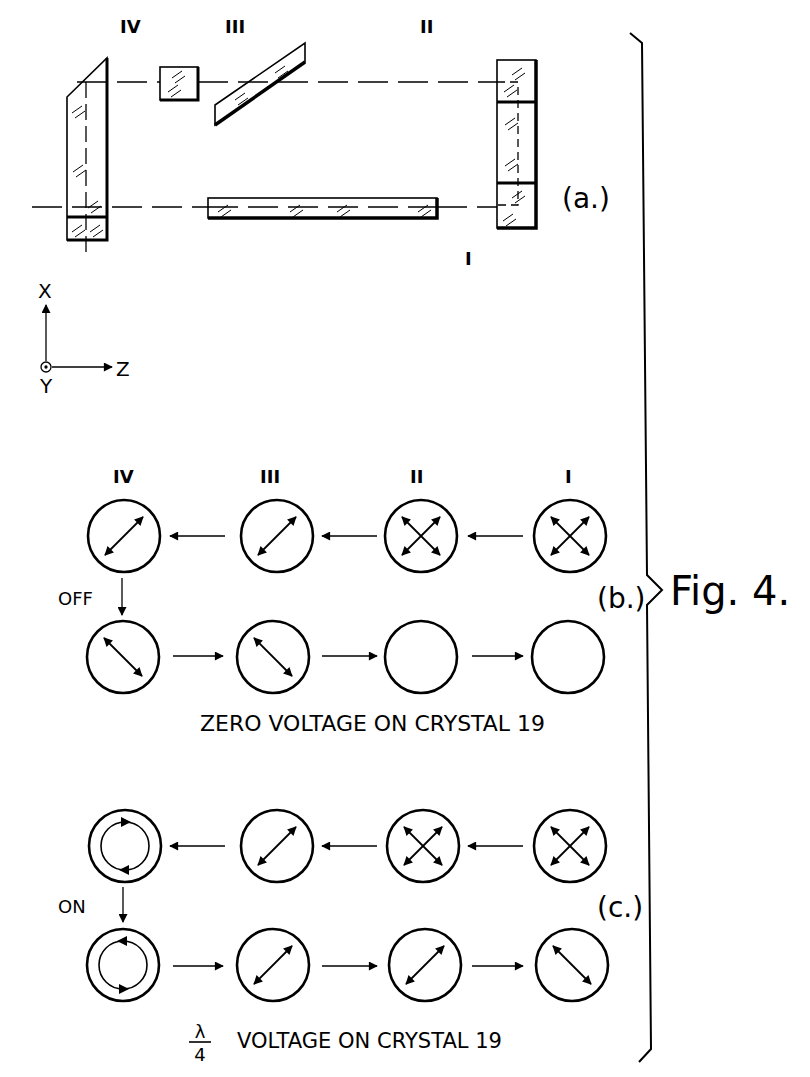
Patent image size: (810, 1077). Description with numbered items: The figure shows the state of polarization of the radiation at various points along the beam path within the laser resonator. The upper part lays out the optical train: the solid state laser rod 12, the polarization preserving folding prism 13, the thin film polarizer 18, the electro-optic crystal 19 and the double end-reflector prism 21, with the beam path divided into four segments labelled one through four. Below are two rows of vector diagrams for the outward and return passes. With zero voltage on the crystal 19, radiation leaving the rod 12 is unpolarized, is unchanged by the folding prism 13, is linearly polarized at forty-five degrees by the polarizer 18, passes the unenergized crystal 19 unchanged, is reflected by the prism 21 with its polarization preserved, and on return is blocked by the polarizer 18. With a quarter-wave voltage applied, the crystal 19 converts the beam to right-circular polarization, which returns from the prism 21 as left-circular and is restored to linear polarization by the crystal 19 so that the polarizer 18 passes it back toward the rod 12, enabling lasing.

The solid state laser rod 12 is at (312, 220).
The polarization preserving folding prism 13 is at (537, 135).
The thin film polarizer 18 is at (230, 118).
The electro-optic crystal 19 is at (163, 100).
The double end-reflector prism 21 is at (67, 155).